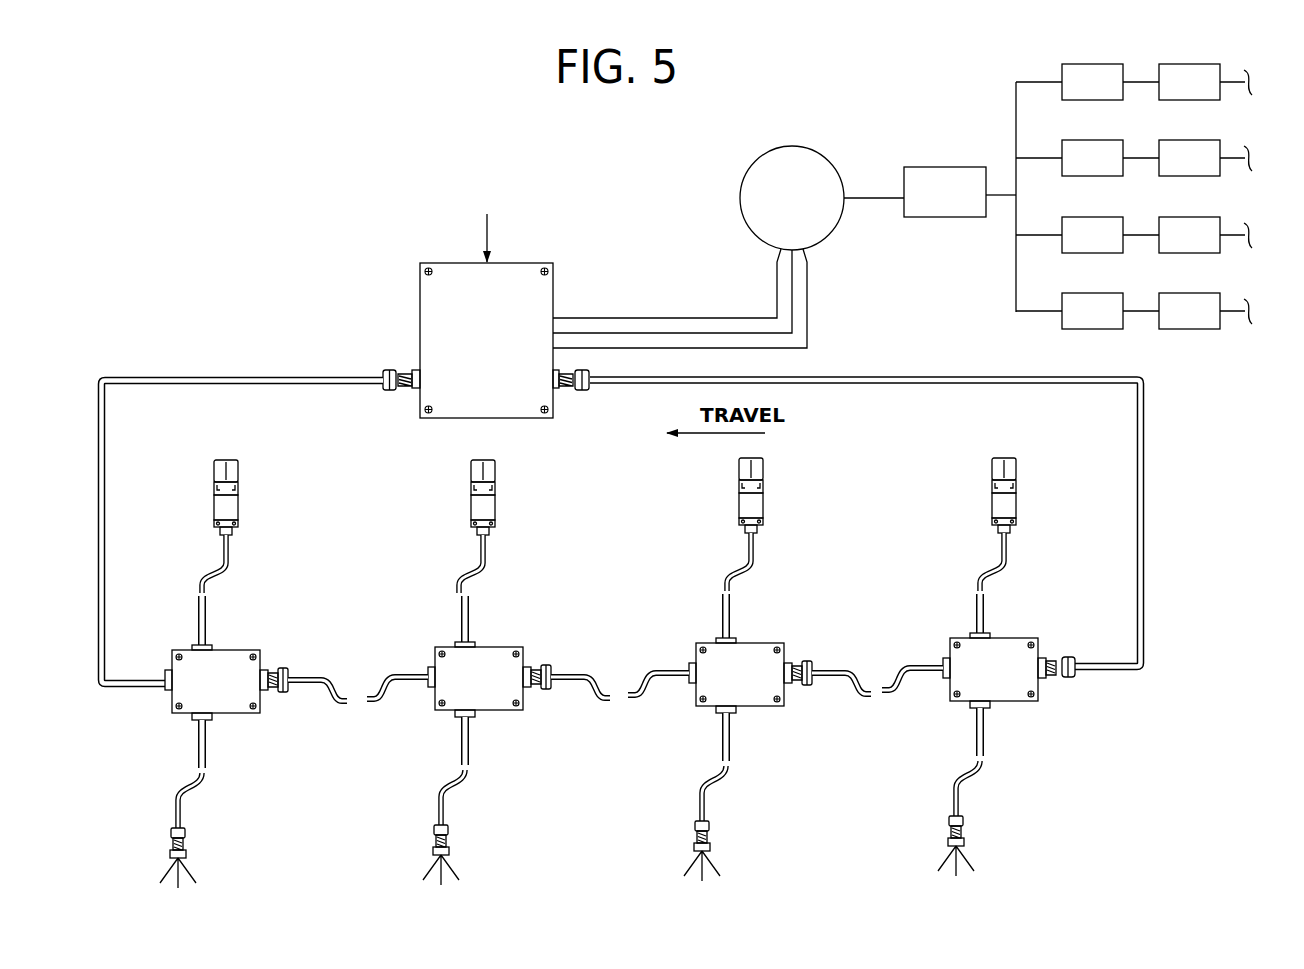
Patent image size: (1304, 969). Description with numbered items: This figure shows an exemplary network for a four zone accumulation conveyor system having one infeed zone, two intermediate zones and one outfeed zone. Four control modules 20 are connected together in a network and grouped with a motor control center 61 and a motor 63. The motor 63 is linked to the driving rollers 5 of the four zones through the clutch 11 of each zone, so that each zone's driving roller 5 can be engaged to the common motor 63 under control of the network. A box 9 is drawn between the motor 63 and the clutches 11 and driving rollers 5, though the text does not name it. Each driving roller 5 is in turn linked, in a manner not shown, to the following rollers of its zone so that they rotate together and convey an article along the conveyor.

The driving roller 5 is at (1187, 63).
The controller box 9 is at (938, 217).
The clutch 11 is at (1090, 63).
The control module 20 is at (429, 727).
The motor control center 61 is at (401, 313).
The motor 63 is at (838, 152).